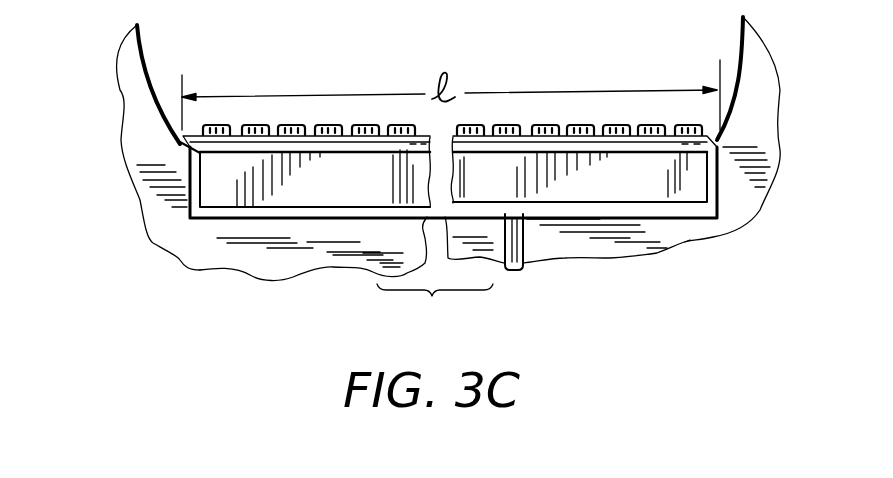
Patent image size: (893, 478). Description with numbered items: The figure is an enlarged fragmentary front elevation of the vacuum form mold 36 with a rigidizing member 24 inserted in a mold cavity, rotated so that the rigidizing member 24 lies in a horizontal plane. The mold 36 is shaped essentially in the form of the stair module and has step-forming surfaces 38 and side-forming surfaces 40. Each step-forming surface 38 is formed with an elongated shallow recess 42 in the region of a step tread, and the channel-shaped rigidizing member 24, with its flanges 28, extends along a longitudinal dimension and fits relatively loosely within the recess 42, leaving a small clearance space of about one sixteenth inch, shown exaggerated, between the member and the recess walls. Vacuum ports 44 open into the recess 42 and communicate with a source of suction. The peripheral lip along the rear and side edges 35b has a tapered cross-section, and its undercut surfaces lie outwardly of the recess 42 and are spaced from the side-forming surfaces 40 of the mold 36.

The vacuum form mold 36 is at (143, 60).
The side-forming surfaces 40 is at (745, 48).
The rear and side edges 35b is at (187, 148).
The rigidizing member 24 is at (500, 124).
The flanges 28 is at (218, 199).
The recess 42 is at (333, 212).
The vacuum ports 44 is at (517, 270).
The step-forming surfaces 38 is at (670, 225).